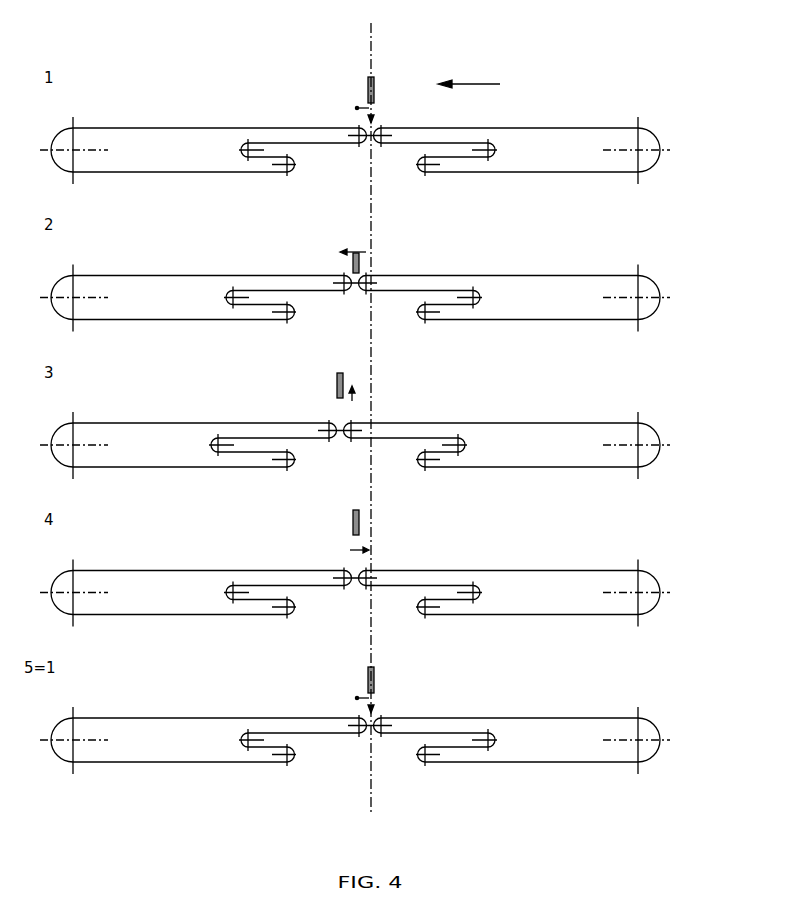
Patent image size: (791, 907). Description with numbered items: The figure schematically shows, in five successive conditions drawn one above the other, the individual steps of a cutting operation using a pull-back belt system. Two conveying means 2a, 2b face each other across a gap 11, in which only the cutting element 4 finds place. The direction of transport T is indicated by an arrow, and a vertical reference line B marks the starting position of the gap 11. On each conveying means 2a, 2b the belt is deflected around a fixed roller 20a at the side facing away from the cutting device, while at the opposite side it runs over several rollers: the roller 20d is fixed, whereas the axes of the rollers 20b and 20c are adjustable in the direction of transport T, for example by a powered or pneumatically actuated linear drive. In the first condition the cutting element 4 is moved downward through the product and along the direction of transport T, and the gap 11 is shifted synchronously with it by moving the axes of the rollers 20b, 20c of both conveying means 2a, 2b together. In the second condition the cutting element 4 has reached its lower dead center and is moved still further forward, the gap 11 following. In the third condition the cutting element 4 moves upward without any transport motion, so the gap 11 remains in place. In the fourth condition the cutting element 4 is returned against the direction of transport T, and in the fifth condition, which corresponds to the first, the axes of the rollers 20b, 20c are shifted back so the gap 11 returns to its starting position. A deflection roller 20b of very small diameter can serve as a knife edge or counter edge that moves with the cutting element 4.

The conveying means 2a is at (588, 128).
The conveying means 2b is at (120, 128).
The cutting element 4 is at (366, 86).
The gap 11 is at (373, 151).
The roller 20a is at (72, 149).
The roller 20b is at (357, 150).
The roller 20c is at (244, 146).
The roller 20d is at (284, 171).
The reference axis B is at (373, 29).
The direction of transport T is at (469, 75).